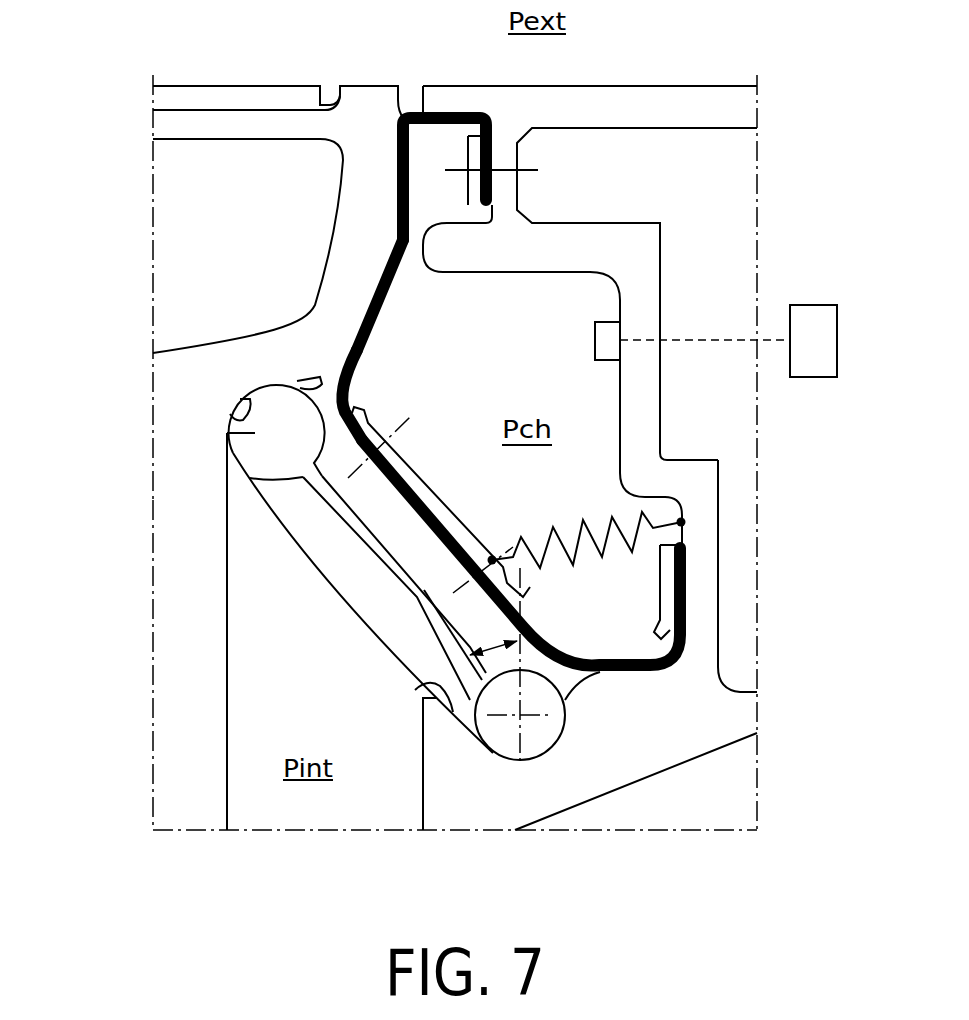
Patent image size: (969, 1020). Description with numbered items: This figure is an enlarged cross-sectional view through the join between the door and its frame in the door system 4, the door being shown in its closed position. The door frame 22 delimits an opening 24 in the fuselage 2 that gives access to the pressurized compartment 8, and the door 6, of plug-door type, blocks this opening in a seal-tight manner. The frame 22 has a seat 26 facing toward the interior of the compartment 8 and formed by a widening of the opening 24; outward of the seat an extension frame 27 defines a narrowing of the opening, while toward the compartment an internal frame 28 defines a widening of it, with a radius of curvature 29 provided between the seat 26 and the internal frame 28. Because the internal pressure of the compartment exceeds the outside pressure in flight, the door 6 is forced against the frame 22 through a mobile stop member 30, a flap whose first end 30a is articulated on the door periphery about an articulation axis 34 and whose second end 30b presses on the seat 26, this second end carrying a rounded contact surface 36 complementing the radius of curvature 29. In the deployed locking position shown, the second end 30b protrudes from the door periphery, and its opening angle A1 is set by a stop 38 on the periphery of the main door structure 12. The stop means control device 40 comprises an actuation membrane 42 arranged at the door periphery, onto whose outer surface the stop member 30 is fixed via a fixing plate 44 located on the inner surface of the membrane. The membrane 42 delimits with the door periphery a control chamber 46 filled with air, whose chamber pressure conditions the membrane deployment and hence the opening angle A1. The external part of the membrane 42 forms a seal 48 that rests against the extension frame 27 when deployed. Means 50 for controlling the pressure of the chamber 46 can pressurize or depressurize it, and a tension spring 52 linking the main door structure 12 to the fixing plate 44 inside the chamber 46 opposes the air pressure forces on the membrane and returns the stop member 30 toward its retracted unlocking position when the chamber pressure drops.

The fuselage 2 is at (150, 402).
The door system 4 is at (150, 632).
The door 6 is at (760, 552).
The pressurized compartment 8 is at (410, 873).
The main door structure 12 is at (735, 718).
The door frame 22 is at (190, 520).
The opening 24 is at (400, 108).
The seat 26 is at (325, 388).
The extension frame 27 is at (355, 204).
The internal frame 28 is at (173, 585).
The radius of curvature 29 is at (227, 417).
The mobile stop member 30 is at (348, 582).
The first end 30a is at (502, 742).
The second end 30b is at (227, 433).
The articulation axis 34 is at (520, 715).
The rounded contact surface 36 is at (242, 400).
The stop 38 is at (415, 690).
The stop means control device 40 is at (582, 297).
The actuation membrane 42 is at (357, 362).
The fixing plate 44 is at (433, 499).
The control chamber 46 is at (543, 371).
The seal 48 is at (383, 312).
The means for controlling the pressure 50 is at (810, 310).
The tension spring 52 is at (578, 535).
The opening angle A1 is at (490, 640).